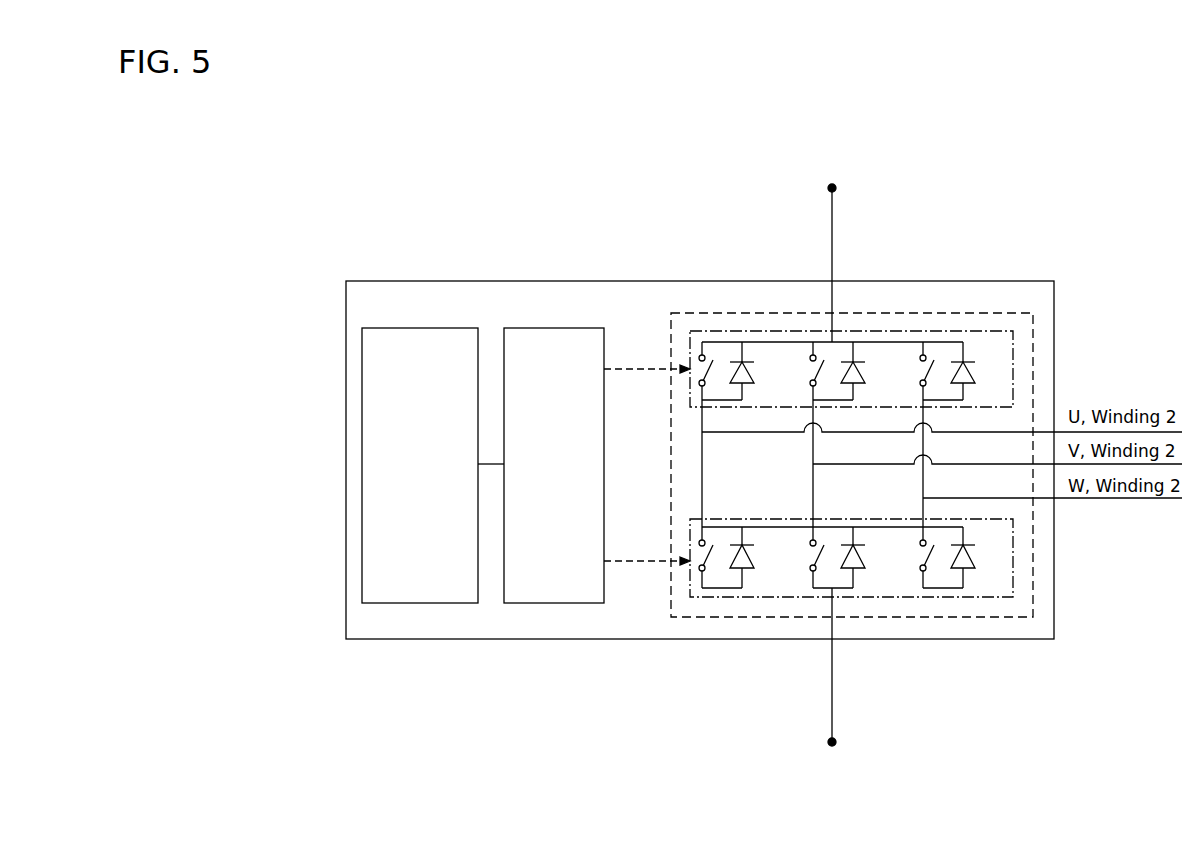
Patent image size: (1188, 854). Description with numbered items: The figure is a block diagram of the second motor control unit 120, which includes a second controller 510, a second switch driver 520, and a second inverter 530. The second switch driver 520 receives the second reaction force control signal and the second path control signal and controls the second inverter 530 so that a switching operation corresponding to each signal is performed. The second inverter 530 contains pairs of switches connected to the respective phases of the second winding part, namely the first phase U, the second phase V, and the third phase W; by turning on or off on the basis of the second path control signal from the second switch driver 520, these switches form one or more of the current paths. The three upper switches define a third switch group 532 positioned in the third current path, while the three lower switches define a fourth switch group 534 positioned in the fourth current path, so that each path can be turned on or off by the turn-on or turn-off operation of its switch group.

The second motor control unit 120 is at (432, 281).
The second controller 510 is at (417, 603).
The second switch driver 520 is at (553, 603).
The second inverter 530 is at (758, 312).
The third switch group 532 is at (954, 330).
The fourth switch group 534 is at (900, 600).